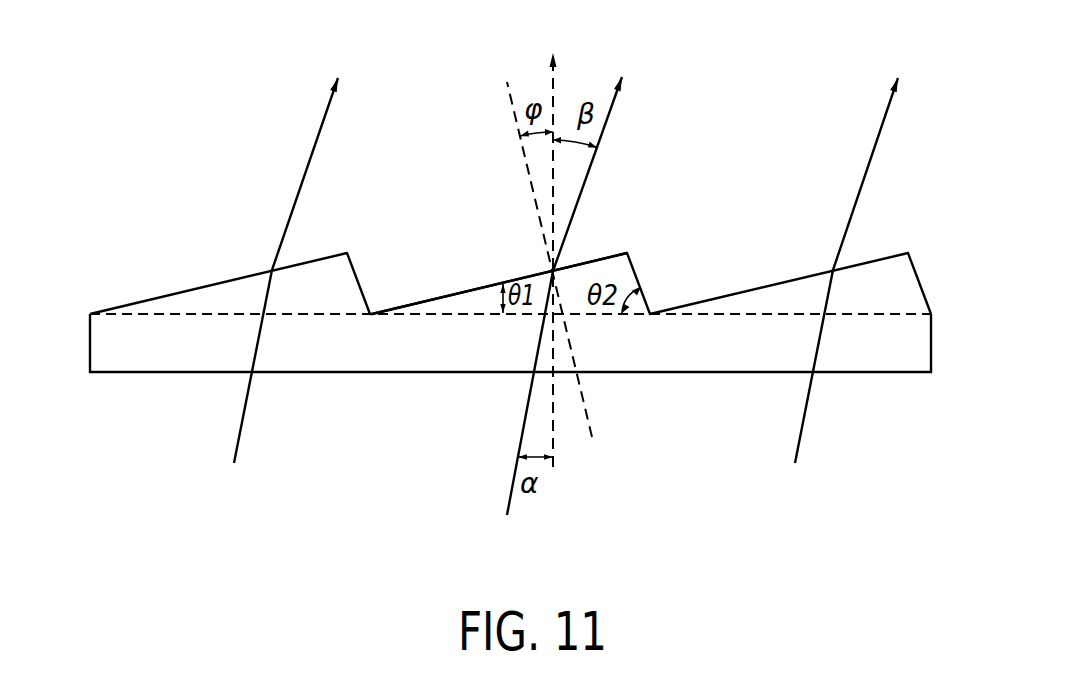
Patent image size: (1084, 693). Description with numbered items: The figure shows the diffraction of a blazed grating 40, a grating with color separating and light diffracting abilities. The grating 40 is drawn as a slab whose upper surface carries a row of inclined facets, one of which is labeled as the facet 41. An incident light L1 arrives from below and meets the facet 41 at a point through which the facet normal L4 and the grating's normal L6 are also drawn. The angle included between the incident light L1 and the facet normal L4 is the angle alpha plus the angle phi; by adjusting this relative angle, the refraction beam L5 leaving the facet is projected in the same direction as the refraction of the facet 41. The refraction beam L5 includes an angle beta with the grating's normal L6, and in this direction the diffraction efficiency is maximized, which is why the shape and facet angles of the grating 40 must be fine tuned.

The grating 40 is at (613, 233).
The facet 41 is at (450, 293).
The incident light L1 is at (521, 415).
The facet normal L4 is at (538, 240).
The refraction beam L5 is at (600, 153).
The grating's normal L6 is at (550, 240).